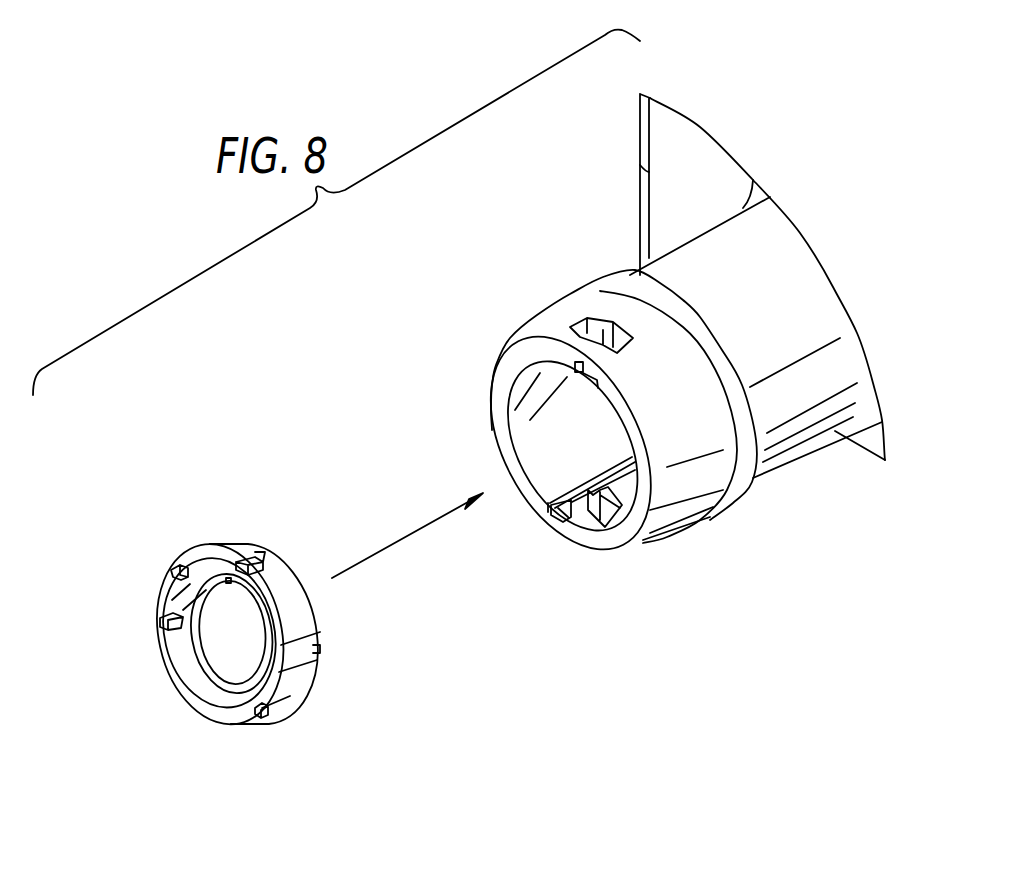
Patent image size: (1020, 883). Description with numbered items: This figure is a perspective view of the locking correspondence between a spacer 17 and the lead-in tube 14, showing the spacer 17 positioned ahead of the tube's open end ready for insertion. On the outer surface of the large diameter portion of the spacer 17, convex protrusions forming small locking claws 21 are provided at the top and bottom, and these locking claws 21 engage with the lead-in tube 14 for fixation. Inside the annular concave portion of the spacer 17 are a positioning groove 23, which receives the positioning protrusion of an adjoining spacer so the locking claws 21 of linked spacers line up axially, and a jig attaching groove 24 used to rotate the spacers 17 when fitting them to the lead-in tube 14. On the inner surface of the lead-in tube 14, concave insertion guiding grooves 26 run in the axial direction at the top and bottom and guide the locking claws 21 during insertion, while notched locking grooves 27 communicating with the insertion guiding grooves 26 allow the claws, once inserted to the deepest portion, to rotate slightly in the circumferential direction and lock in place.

The lead-in tube 14 is at (807, 450).
The spacer 17 is at (214, 630).
The locking claw 21 is at (250, 558).
The positioning groove 23 is at (172, 570).
The jig attaching groove 24 is at (227, 581).
The insertion guiding groove 26 is at (578, 373).
The locking groove 27 is at (587, 325).